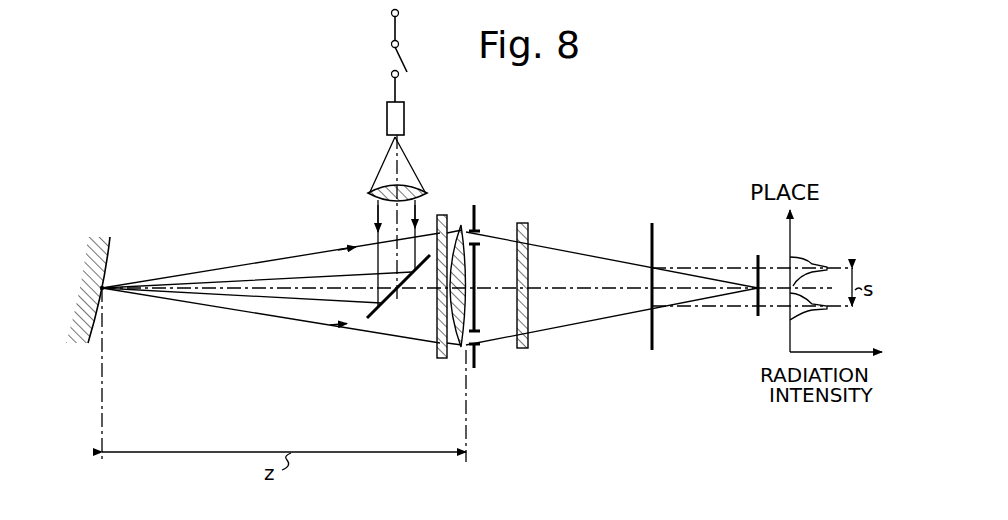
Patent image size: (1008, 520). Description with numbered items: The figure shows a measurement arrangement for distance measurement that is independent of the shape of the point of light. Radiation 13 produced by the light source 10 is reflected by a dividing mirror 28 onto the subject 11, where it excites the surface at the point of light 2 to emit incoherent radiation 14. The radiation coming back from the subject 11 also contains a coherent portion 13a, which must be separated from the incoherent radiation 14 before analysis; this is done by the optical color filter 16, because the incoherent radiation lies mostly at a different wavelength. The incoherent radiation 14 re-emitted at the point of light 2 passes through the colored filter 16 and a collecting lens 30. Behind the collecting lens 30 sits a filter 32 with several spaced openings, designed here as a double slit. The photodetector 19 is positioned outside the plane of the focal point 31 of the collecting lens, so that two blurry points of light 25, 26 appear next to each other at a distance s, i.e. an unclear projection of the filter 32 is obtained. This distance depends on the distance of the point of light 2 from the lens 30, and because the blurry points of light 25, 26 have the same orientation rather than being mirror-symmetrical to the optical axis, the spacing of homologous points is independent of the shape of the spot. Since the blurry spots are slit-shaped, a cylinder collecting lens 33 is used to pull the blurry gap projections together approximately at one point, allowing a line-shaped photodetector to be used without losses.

The point of light 2 is at (104, 286).
The light source 10 is at (404, 114).
The subject 11 is at (108, 241).
The radiation of the light source 13 is at (386, 211).
The coherent portion of the beam 13a is at (306, 296).
The incoherent radiation 14 is at (343, 314).
The optical color filter 16 is at (441, 358).
The photodetector 19 is at (654, 335).
The blurry point of light 25 is at (800, 261).
The blurry point of light 26 is at (802, 312).
The dividing mirror 28 is at (380, 307).
The collecting lens 30 is at (457, 232).
The focal point of the collecting lens 31 is at (757, 312).
The filter with several spaced openings 32 is at (480, 230).
The cylinder collecting lens 33 is at (527, 349).